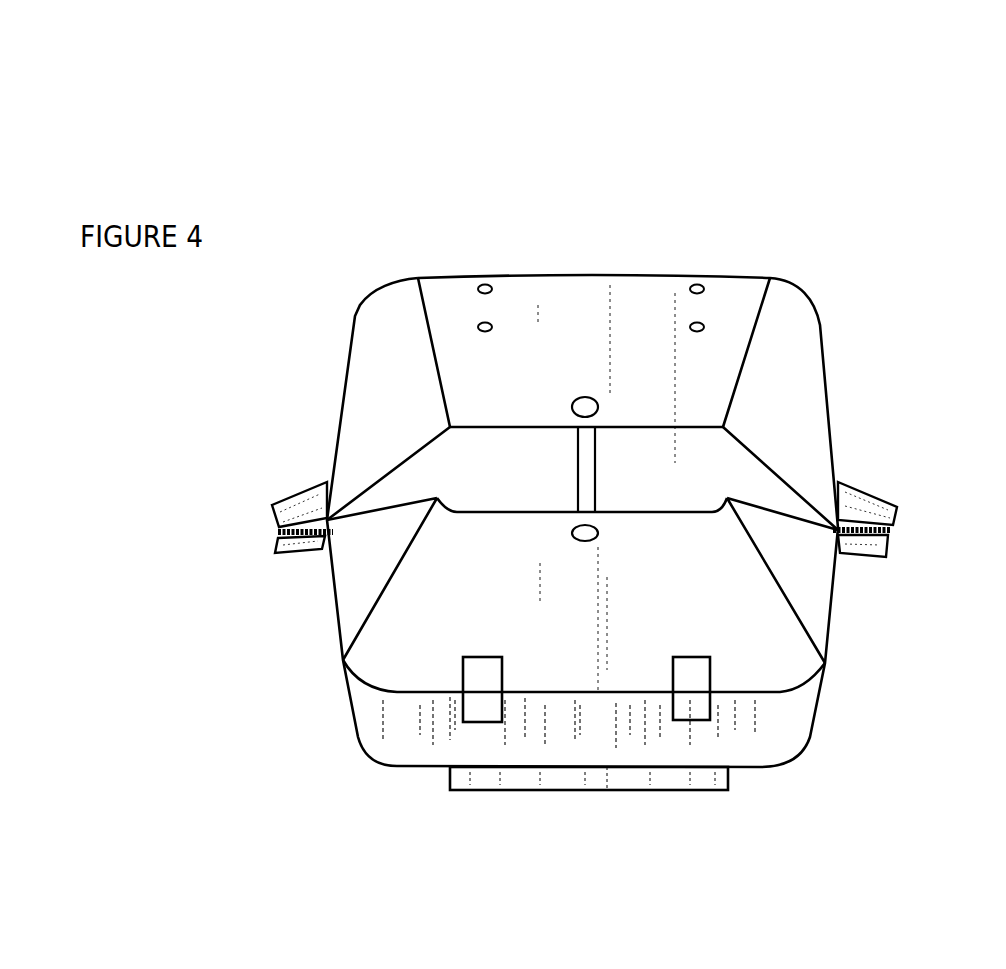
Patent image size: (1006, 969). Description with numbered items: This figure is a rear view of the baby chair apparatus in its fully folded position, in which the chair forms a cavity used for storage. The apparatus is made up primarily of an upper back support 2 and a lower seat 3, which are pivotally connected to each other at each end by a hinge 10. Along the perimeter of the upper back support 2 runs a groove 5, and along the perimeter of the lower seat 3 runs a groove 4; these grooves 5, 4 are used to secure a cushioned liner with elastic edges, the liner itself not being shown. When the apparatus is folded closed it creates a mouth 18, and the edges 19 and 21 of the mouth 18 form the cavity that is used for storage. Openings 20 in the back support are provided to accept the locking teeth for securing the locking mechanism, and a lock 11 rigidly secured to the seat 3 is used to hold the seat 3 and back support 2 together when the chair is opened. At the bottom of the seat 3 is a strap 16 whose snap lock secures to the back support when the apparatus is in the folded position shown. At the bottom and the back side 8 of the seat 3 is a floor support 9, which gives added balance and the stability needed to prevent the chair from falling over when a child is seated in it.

The upper back support 2 is at (555, 262).
The lower seat 3 is at (523, 599).
The groove 4 is at (410, 625).
The groove 5 is at (282, 500).
The back side of seat 8 is at (450, 786).
The floor support 9 is at (530, 796).
The hinge 10 is at (258, 498).
The lock 11 is at (423, 717).
The strap 16 is at (364, 484).
The mouth 18 is at (647, 439).
The edge of mouth 19 is at (700, 725).
The opening 20 is at (418, 272).
The edge of mouth 21 is at (630, 268).